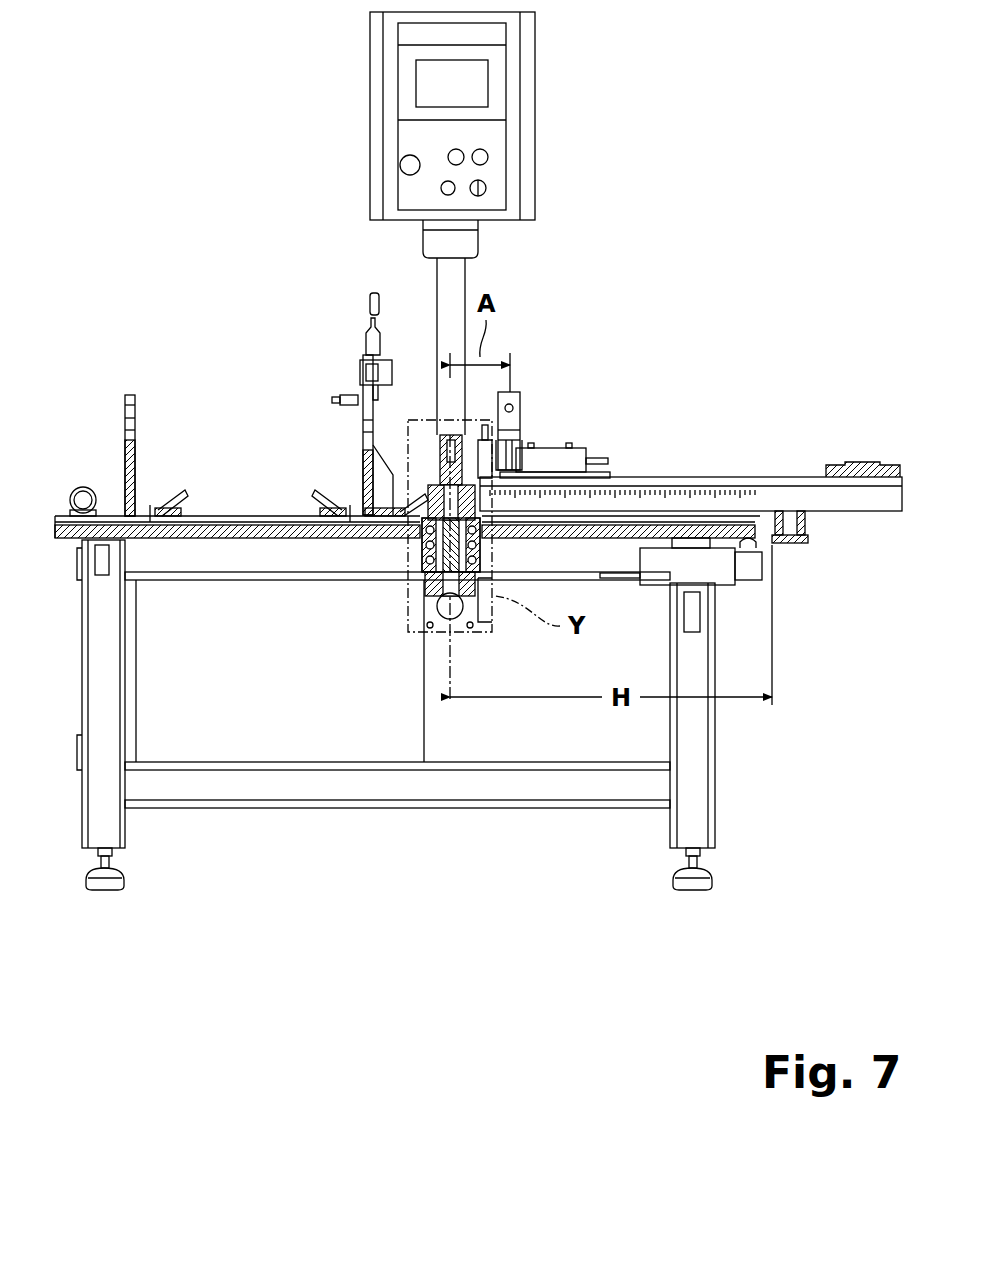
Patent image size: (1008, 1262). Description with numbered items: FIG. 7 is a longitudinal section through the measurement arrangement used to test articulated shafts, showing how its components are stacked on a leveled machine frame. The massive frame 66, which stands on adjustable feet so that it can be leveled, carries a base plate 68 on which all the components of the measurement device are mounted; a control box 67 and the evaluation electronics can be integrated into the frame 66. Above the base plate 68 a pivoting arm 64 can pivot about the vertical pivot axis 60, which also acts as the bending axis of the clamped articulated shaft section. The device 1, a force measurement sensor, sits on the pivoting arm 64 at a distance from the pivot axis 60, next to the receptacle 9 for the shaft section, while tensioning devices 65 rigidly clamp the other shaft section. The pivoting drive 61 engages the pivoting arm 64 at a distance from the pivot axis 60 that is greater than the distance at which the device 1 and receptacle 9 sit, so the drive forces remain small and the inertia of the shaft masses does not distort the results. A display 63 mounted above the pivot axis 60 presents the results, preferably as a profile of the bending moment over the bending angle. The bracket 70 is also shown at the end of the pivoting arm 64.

The device 1 is at (550, 448).
The receptacle 9 is at (515, 408).
The pivot axis 60 is at (450, 400).
The pivoting drive 61 is at (790, 552).
The display 63 is at (522, 90).
The pivoting arm 64 is at (767, 492).
The tensioning devices 65 is at (362, 396).
The frame 66 is at (96, 672).
The control box 67 is at (280, 745).
The base plate 68 is at (248, 527).
The bracket 70 is at (806, 520).